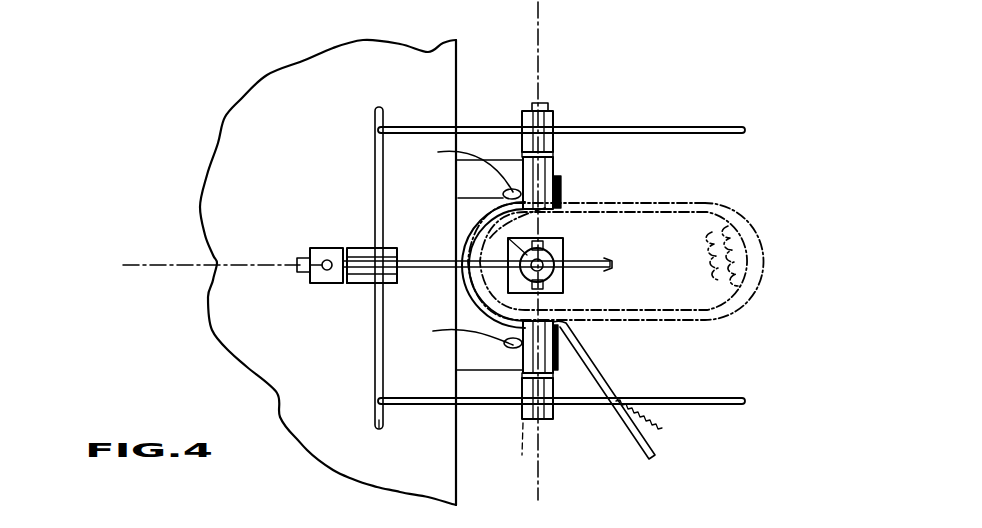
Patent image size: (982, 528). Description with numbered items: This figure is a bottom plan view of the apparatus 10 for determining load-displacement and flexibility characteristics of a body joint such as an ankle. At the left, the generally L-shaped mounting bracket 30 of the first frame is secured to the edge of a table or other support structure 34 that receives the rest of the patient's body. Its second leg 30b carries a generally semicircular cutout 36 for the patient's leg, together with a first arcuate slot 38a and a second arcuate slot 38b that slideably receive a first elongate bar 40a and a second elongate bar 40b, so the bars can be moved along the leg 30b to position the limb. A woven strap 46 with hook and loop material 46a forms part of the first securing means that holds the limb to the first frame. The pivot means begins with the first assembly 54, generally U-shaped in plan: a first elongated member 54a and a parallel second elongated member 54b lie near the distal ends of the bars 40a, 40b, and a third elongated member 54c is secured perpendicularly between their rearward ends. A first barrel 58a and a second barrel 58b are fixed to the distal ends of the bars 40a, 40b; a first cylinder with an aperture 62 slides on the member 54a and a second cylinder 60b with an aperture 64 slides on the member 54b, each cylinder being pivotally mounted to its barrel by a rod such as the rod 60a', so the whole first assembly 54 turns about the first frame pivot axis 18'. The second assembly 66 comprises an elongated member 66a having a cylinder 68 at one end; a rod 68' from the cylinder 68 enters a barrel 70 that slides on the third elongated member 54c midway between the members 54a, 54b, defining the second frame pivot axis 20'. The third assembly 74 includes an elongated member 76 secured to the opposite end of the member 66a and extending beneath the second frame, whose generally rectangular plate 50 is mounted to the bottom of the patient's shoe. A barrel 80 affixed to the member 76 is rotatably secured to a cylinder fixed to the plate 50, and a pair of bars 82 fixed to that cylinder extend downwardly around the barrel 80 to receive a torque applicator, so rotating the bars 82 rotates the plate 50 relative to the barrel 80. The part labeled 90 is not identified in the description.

The apparatus 10 is at (632, 62).
The first frame pivot axis 18' is at (573, 251).
The second frame pivot axis 20' is at (211, 245).
The mounting bracket 30 is at (472, 358).
The second leg 30b is at (480, 189).
The table or other support structure 34 is at (330, 115).
The semicircular cutout 36 is at (571, 290).
The first arcuate slot 38a is at (460, 172).
The second arcuate slot 38b is at (460, 334).
The first elongate bar 40a is at (556, 168).
The second elongate bar 40b is at (558, 350).
The woven strap 46 is at (603, 382).
The hook and loop material 46a is at (562, 187).
The plate 50 is at (567, 257).
The first assembly 54 is at (388, 126).
The first elongated member 54a is at (702, 128).
The second elongated member 54b is at (697, 398).
The third elongated member 54c is at (377, 428).
The first barrel 58a is at (553, 210).
The second barrel 58b is at (555, 378).
The rod 60a' is at (584, 175).
The second cylinder 60b is at (518, 382).
The aperture 62 is at (528, 434).
The aperture 64 is at (555, 114).
The second assembly 66 is at (310, 252).
The elongated member 66a is at (316, 283).
The cylinder 68 is at (348, 271).
The rod 68' is at (357, 310).
The barrel 70 is at (412, 240).
The third assembly 74 is at (610, 260).
The elongated member 76 is at (613, 263).
The barrel 80 is at (483, 226).
The bars 82 is at (568, 307).
The bolt head 90 is at (541, 102).